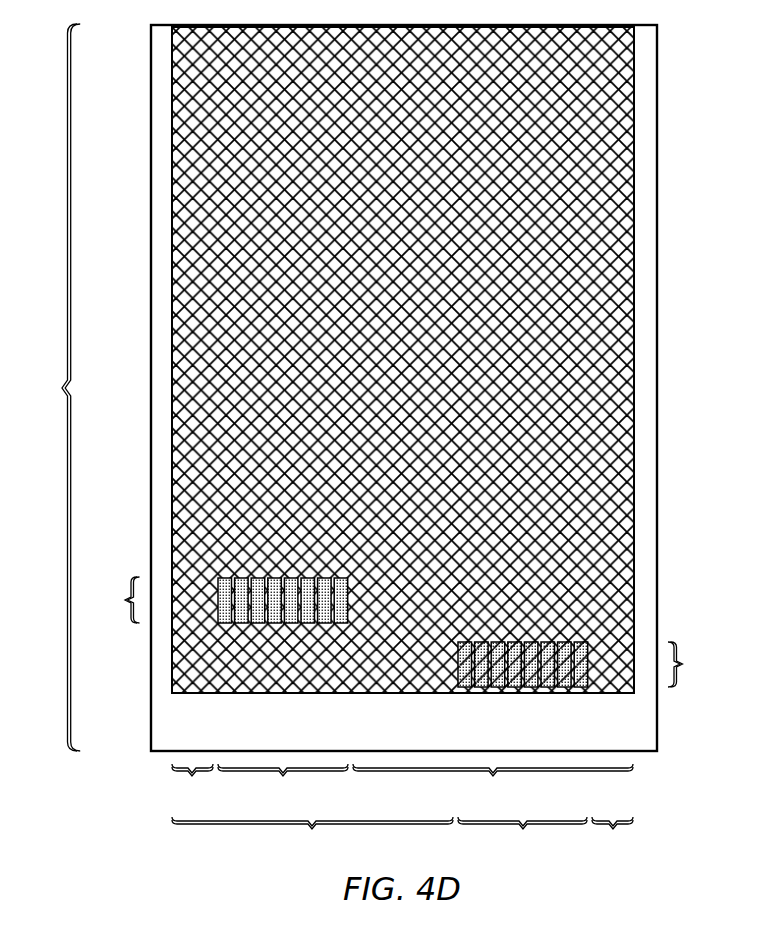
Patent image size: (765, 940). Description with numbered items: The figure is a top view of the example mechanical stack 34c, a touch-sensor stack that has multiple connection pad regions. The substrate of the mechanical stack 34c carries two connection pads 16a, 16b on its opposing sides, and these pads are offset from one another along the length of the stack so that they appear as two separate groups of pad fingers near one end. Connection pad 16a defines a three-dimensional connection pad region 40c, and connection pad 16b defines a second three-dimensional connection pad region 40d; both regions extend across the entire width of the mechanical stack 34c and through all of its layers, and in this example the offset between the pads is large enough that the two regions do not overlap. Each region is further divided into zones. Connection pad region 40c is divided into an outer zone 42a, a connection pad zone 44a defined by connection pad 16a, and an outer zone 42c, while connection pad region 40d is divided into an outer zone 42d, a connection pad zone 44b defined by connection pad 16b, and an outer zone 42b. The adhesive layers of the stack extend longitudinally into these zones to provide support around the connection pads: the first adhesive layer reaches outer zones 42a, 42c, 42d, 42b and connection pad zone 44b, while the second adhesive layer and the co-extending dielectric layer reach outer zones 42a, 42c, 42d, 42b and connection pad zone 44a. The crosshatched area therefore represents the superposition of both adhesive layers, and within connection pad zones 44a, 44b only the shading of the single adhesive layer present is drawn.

The connection pad 16a is at (278, 623).
The connection pad 16b is at (530, 687).
The mechanical stack 34c is at (51, 387).
The connection pad region 40c is at (111, 600).
The connection pad region 40d is at (696, 664).
The outer zone 42a is at (192, 786).
The outer zone 42b is at (612, 838).
The outer zone 42c is at (493, 786).
The outer zone 42d is at (312, 838).
The connection pad zone 44a is at (283, 786).
The connection pad zone 44b is at (522, 838).